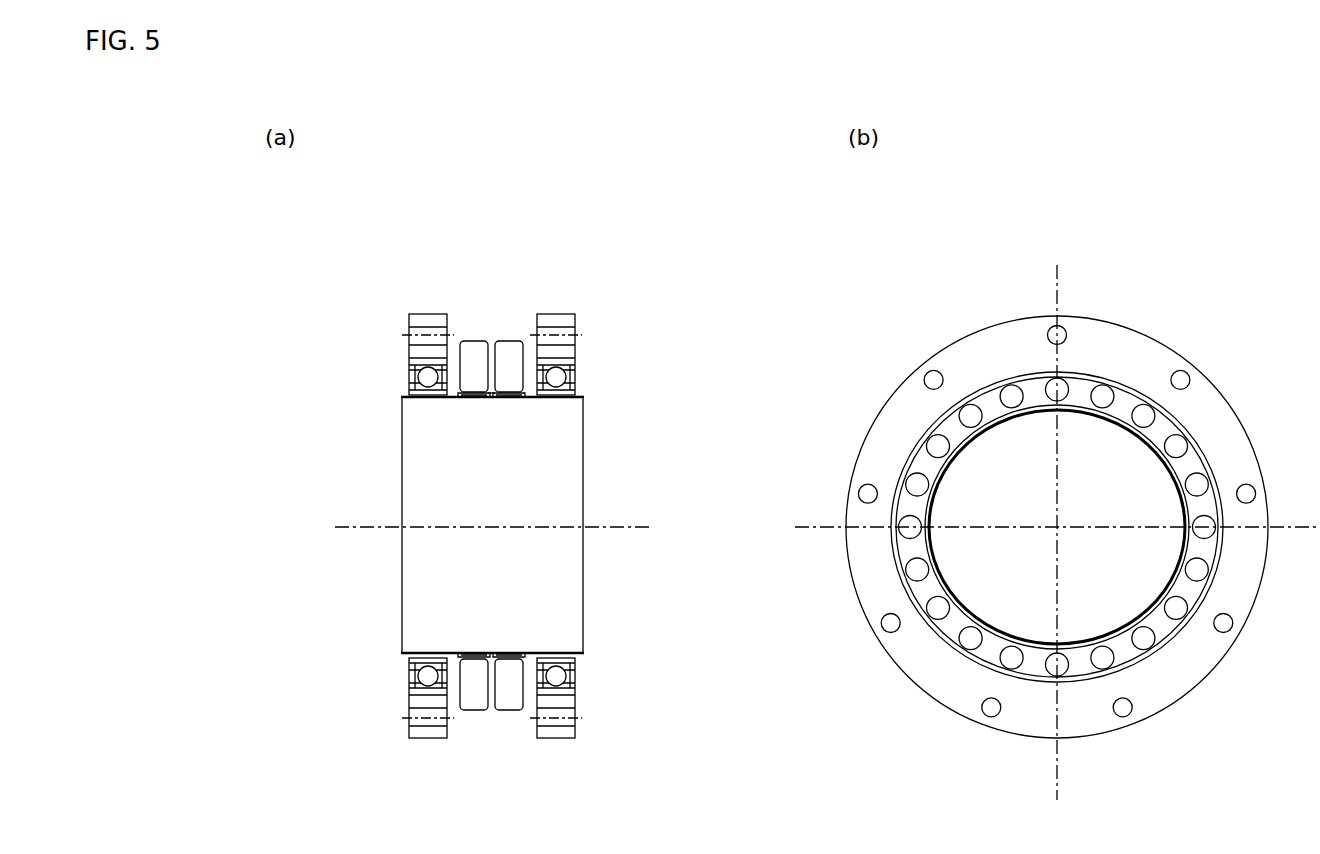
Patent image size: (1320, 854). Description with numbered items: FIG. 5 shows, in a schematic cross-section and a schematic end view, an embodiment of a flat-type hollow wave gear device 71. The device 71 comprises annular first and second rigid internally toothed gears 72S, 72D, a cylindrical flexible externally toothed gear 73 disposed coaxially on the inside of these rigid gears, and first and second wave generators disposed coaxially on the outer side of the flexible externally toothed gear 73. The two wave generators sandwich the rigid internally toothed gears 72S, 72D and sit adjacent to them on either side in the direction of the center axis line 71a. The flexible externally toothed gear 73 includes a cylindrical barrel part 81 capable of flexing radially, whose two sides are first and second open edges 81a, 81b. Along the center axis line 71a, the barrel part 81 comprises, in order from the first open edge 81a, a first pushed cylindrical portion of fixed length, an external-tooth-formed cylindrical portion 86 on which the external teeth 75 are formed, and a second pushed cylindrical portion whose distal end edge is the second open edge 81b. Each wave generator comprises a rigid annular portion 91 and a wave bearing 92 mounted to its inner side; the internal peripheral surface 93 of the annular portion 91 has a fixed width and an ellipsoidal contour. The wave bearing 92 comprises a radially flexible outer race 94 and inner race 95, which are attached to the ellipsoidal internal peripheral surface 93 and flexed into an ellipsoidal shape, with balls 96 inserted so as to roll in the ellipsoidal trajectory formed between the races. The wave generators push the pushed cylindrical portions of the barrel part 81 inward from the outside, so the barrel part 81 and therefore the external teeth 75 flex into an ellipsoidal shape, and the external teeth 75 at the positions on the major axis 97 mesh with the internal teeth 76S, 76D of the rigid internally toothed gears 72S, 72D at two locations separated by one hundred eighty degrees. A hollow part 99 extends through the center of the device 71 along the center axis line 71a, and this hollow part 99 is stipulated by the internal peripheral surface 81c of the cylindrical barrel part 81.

The flat-type hollow wave gear device 71 is at (808, 509).
The center axis line 71a is at (339, 526).
The first rigid internally toothed gear 72S is at (459, 363).
The second rigid internally toothed gear 72D is at (531, 363).
The flexible externally toothed gear 73 is at (594, 409).
The external teeth 75 is at (490, 398).
The internal teeth of first rigid internally toothed gear 76S is at (470, 397).
The internal teeth of second rigid internally toothed gear 76D is at (512, 397).
The cylindrical barrel part 81 is at (569, 553).
The first open edge 81a is at (410, 653).
The second open edge 81b is at (578, 652).
The internal peripheral surface 81c is at (430, 397).
The external-tooth-formed cylindrical portion 86 is at (527, 642).
The rigid annular portion 91 is at (605, 731).
The wave bearing 92 is at (574, 674).
The internal peripheral surface of annular portion 93 is at (550, 690).
The outer race 94 is at (574, 690).
The inner race 95 is at (576, 664).
The balls 96 is at (565, 679).
The major axis 97 is at (812, 540).
The hollow part 99 is at (536, 503).